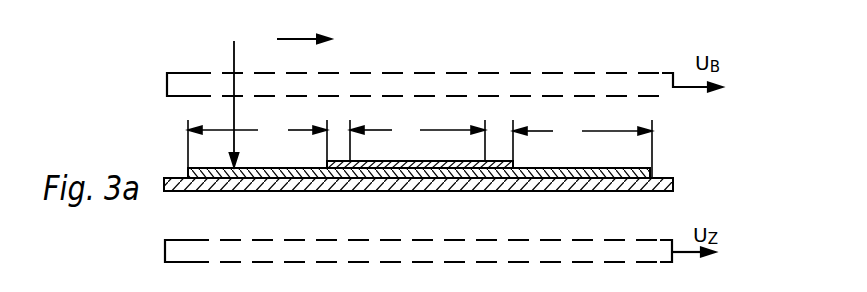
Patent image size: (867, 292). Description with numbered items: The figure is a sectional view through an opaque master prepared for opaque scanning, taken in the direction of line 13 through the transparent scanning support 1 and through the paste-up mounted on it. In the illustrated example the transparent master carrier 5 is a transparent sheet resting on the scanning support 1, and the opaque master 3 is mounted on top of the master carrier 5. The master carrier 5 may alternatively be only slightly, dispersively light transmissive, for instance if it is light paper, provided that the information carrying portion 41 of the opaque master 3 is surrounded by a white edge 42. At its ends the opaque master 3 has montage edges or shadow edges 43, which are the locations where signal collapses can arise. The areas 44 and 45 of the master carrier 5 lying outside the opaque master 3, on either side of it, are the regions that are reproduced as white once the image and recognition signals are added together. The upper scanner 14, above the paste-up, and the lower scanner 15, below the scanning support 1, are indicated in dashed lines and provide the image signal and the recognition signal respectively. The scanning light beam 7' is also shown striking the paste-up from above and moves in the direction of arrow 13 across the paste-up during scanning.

The transparent scanning support 1 is at (628, 191).
The opaque master 3 is at (412, 162).
The master carrier 5 is at (652, 176).
The scanning light beam 7' is at (215, 96).
The direction arrow 13 is at (296, 37).
The upper scanner 14 is at (665, 93).
The lower scanner 15 is at (558, 258).
The information carrying portion 41 is at (417, 131).
The white edge 42 is at (342, 158).
The montage edges 43 is at (327, 164).
The area of master carrier outside the opaque master 44 is at (257, 144).
The area of master carrier outside the opaque master 45 is at (582, 149).